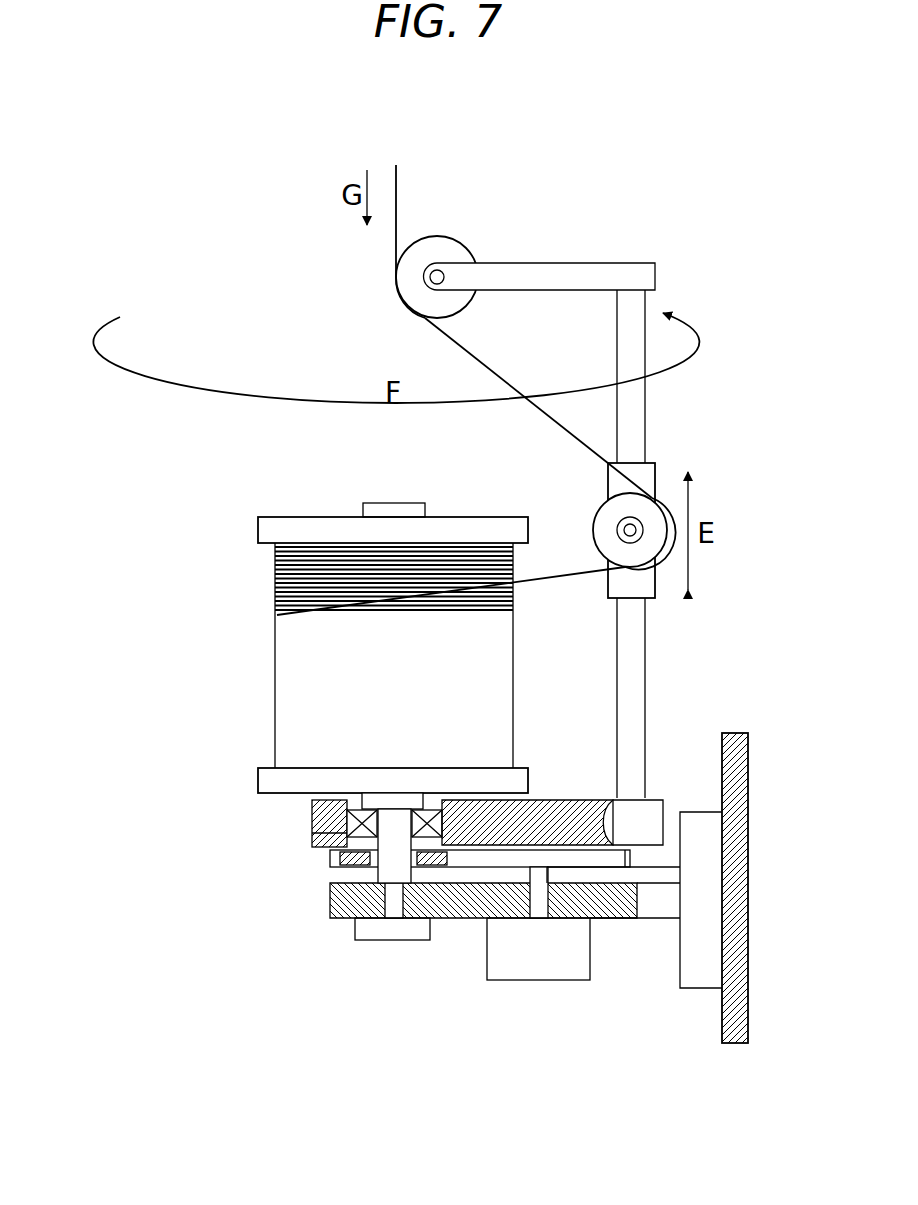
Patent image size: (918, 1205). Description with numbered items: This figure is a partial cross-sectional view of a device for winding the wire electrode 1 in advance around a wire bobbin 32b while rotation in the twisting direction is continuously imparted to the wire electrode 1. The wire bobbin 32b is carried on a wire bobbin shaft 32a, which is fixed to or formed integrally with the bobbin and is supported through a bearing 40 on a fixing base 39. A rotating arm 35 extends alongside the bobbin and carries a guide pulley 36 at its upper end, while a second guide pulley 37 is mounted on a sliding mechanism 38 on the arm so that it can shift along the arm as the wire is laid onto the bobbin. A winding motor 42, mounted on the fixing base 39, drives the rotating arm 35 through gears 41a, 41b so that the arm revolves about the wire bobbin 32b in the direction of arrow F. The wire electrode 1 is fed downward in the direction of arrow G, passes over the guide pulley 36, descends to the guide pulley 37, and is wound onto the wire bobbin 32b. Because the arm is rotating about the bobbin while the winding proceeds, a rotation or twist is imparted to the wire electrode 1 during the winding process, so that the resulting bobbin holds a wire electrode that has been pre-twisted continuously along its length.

The wire electrode 1 is at (405, 178).
The guide pulley 36 is at (457, 245).
The rotating arm 35 is at (633, 688).
The sliding mechanism 38 is at (662, 463).
The guide pulley 37 is at (608, 510).
The wire bobbin 32b is at (258, 528).
The bearing 40 is at (345, 825).
The gear 41a is at (627, 858).
The gear 41b is at (330, 855).
The wire bobbin shaft 32a is at (395, 868).
The winding motor 42 is at (545, 972).
The fixing base 39 is at (700, 985).